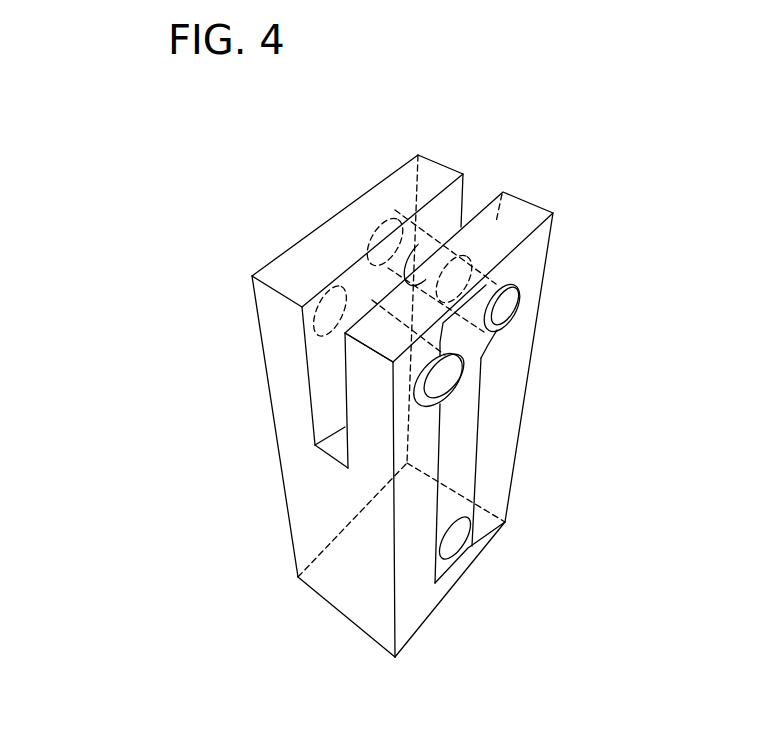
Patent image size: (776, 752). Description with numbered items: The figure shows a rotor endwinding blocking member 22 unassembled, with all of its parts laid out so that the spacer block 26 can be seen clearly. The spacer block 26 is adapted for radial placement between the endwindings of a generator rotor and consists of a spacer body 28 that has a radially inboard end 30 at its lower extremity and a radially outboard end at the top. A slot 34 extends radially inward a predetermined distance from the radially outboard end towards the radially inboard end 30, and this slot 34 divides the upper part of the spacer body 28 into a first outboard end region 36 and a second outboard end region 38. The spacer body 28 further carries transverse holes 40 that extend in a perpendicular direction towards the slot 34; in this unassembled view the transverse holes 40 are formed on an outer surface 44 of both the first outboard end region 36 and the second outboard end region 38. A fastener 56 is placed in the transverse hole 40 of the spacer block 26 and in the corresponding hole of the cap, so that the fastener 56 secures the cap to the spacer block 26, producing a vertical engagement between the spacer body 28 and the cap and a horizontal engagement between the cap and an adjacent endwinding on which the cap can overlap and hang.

The rotor endwinding blocking member 22 is at (440, 390).
The outer surface 44 is at (452, 202).
The first outboard end region 36 is at (277, 318).
The transverse hole 40 is at (348, 326).
The fastener 56 is at (503, 312).
The second outboard end region 38 is at (372, 397).
The slot 34 is at (325, 460).
The spacer block 26 is at (268, 582).
The radially inboard end 30 is at (350, 580).
The spacer body 28 is at (395, 590).